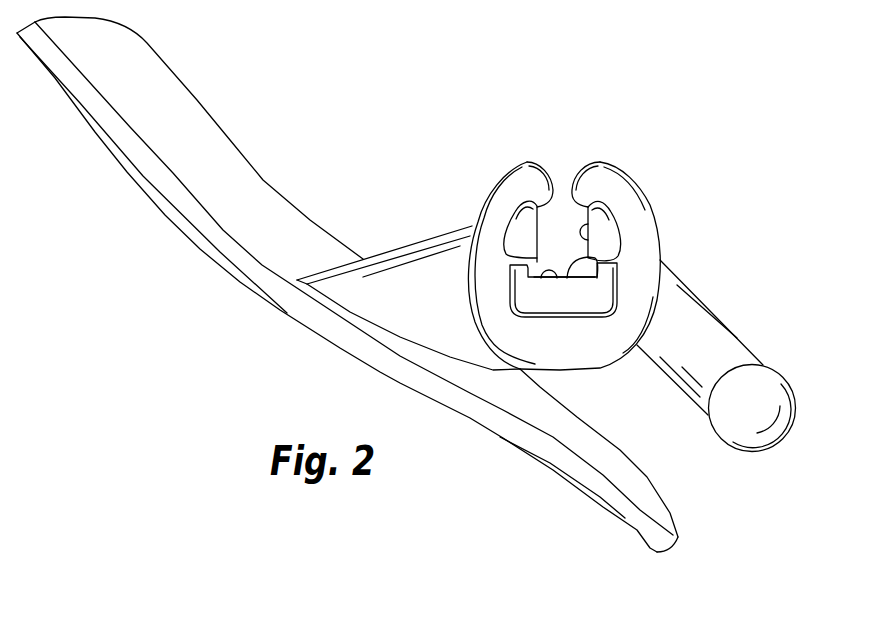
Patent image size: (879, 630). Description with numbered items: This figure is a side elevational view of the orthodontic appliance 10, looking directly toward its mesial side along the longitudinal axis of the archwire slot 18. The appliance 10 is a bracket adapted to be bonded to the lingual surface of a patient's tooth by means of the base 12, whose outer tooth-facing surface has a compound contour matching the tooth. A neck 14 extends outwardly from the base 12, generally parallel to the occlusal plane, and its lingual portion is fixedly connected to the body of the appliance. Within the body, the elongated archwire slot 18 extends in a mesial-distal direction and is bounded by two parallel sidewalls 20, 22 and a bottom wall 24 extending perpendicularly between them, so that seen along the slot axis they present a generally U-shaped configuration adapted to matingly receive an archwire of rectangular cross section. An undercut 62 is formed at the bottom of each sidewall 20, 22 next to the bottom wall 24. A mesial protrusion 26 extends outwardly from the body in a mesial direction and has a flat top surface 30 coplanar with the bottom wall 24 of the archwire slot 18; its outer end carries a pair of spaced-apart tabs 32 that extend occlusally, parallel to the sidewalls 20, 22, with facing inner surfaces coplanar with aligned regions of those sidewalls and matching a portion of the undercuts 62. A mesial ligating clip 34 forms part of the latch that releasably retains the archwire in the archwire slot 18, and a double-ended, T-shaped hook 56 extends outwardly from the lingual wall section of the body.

The orthodontic appliance 10 is at (613, 102).
The base 12 is at (150, 58).
The neck 14 is at (372, 303).
The archwire slot 18 is at (563, 223).
The sidewall 20 is at (527, 165).
The sidewall 22 is at (583, 255).
The bottom wall 24 is at (577, 245).
The mesial protrusion 26 is at (587, 313).
The top surface 30 is at (541, 279).
The tabs 32 is at (508, 275).
The mesial ligating clip 34 is at (630, 175).
The hook 56 is at (727, 348).
The undercut 62 is at (545, 252).